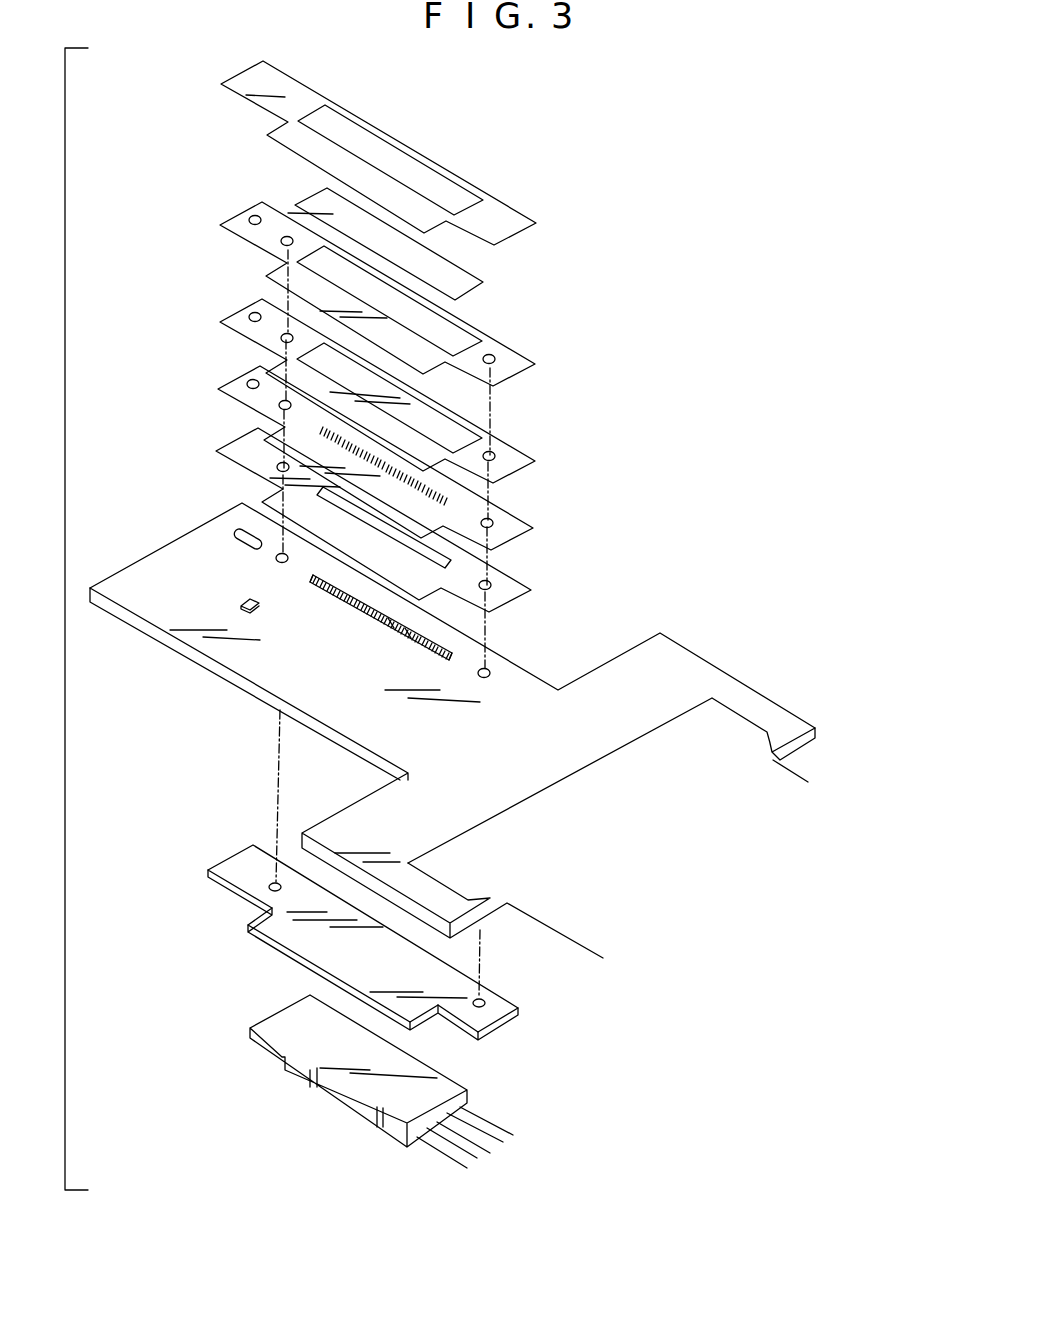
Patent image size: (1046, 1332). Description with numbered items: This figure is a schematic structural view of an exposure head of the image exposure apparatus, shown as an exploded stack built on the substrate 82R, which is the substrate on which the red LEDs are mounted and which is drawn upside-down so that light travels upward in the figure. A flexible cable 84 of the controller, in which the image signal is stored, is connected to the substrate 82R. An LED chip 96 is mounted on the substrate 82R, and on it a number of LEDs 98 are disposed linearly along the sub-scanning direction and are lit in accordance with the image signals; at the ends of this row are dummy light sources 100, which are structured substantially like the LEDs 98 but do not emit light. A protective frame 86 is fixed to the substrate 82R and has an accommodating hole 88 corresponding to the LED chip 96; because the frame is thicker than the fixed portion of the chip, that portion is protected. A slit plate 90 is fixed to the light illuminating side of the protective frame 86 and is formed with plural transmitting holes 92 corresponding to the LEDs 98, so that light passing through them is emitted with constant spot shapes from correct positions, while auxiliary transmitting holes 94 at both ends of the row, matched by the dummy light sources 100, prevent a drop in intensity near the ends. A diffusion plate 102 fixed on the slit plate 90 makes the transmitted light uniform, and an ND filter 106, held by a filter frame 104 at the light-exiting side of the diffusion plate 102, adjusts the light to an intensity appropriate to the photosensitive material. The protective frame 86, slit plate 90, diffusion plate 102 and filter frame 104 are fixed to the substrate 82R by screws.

The substrate 82R is at (170, 548).
The flexible cable 84 is at (780, 788).
The protective frame 86 is at (359, 508).
The accommodating hole 88 is at (443, 557).
The slit plate 90 is at (243, 376).
The transmitting holes 92 is at (392, 465).
The auxiliary transmitting holes 94 is at (323, 427).
The LED chip 96 is at (350, 598).
The LEDs 98 is at (410, 637).
The dummy light sources 100 is at (313, 576).
The diffusion plate 102 is at (246, 306).
The filter frame 104 is at (240, 213).
The ND filter 106 is at (313, 196).